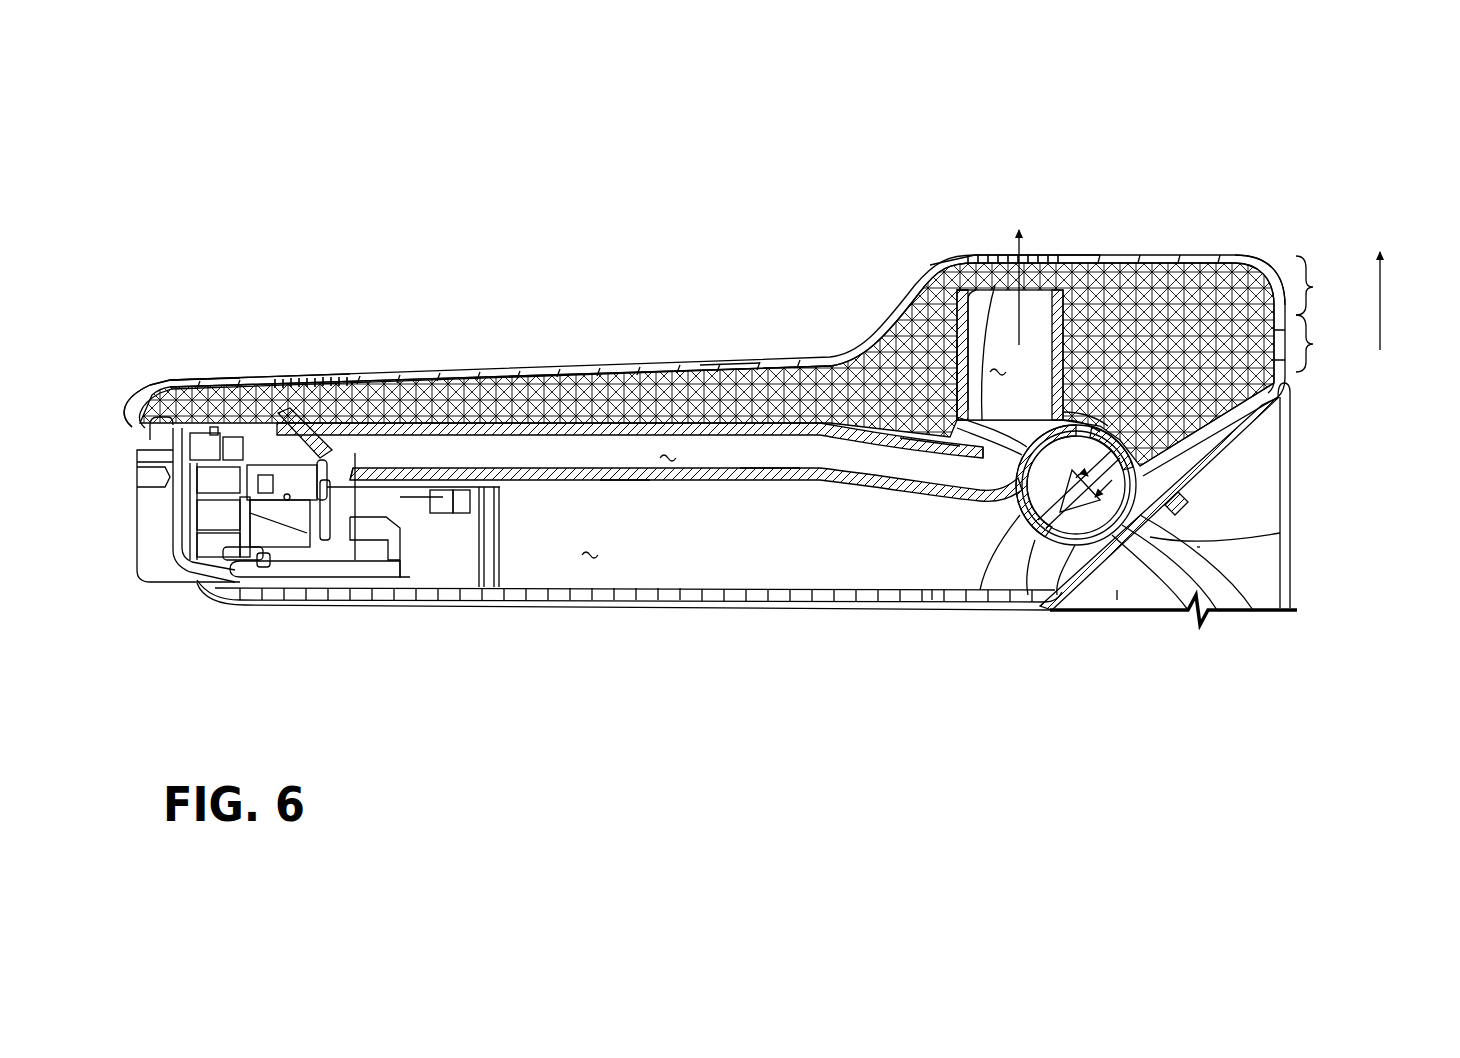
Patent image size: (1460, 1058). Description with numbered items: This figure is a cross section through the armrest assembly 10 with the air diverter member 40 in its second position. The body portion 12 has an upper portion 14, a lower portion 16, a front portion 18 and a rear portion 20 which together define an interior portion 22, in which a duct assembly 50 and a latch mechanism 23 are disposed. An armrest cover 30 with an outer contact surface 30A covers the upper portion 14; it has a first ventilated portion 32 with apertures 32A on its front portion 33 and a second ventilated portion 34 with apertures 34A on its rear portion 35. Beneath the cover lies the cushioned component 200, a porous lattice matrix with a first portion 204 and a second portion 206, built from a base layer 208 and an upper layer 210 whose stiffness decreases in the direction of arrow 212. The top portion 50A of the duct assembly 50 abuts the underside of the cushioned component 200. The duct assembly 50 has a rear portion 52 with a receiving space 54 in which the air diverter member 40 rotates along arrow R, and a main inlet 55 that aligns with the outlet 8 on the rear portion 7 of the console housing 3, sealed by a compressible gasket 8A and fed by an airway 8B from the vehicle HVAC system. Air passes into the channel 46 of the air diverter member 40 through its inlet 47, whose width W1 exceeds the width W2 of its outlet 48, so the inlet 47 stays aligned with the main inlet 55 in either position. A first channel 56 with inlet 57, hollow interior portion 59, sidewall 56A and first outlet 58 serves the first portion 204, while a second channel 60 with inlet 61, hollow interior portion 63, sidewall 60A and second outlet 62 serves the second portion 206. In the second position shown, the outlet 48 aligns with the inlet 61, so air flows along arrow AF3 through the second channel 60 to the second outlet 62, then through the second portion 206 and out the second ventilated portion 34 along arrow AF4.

The armrest assembly 10 is at (292, 243).
The body portion 12 is at (183, 592).
The upper portion 14 is at (130, 393).
The lower portion 16 is at (932, 600).
The front portion 18 is at (173, 513).
The rear portion 20 is at (1110, 580).
The interior portion 22 is at (592, 557).
The latch mechanism 23 is at (413, 558).
The armrest cover 30 is at (622, 362).
The outer contact surface 30A is at (525, 368).
The first ventilated portion 32 is at (353, 370).
The apertures 32A is at (270, 363).
The front portion 33 is at (208, 376).
The second ventilated portion 34 is at (1043, 247).
The apertures 34A is at (968, 242).
The rear portion 35 is at (1222, 256).
The console housing 3 is at (1297, 560).
The rear portion 7 is at (1292, 608).
The outlet 8 is at (1207, 585).
The compressible gasket 8A is at (1175, 490).
The airway 8B is at (1243, 592).
The air diverter member 40 is at (1170, 580).
The channel 46 is at (1040, 535).
The inlet 47 is at (1152, 580).
The outlet 48 is at (1023, 417).
The duct assembly 50 is at (745, 492).
The top portion 50A is at (500, 425).
The rear portion 52 is at (1010, 565).
The receiving space 54 is at (1023, 522).
The main inlet 55 is at (1190, 513).
The first channel 56 is at (533, 493).
The sidewall 56A is at (625, 482).
The inlet 57 is at (978, 465).
The first outlet 58 is at (320, 432).
The hollow interior portion 59 is at (670, 460).
The second channel 60 is at (950, 323).
The sidewall 60A is at (957, 357).
The inlet 61 is at (1040, 437).
The second outlet 62 is at (958, 288).
The hollow interior portion 63 is at (925, 447).
The cushioned component 200 is at (727, 377).
The first portion 204 is at (352, 452).
The second portion 206 is at (772, 470).
The base layer 208 is at (1313, 344).
The upper layer 210 is at (1313, 287).
The arrow 212 is at (1380, 300).
The arrow AF3 is at (1197, 547).
The arrow AF4 is at (1007, 250).
The arrow R is at (1185, 460).
The width W1 is at (1117, 580).
The width W2 is at (932, 600).